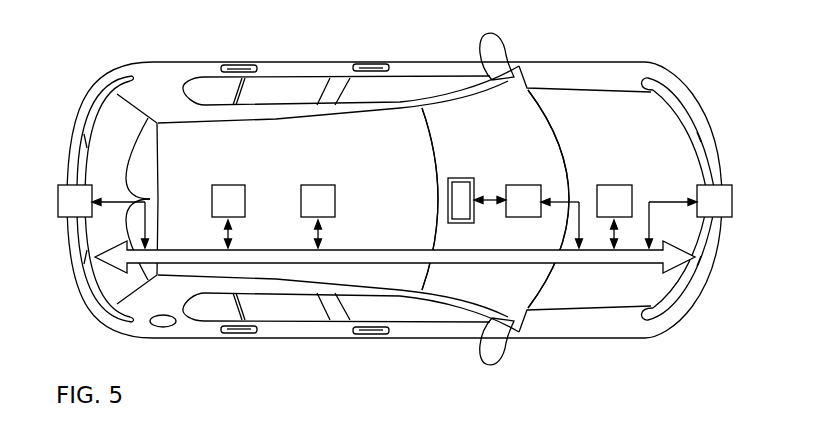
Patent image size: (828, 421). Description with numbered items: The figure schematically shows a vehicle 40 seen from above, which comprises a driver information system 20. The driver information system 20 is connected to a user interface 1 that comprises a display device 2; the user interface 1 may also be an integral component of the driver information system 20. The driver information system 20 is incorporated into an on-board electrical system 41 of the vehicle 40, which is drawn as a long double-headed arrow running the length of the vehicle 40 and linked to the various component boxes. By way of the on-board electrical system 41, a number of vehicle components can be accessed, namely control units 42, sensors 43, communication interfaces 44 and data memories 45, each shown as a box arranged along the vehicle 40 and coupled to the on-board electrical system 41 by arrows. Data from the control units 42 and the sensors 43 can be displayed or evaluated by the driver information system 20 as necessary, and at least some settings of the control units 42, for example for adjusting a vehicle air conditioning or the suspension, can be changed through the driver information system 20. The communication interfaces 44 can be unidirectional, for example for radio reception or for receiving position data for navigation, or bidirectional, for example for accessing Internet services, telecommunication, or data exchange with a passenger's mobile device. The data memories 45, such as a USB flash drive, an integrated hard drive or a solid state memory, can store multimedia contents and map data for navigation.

The user interface 1 is at (461, 222).
The display device 2 is at (457, 182).
The driver information system 20 is at (525, 185).
The vehicle 40 is at (614, 62).
The on-board electrical system 41 is at (614, 262).
The control units 42 is at (615, 185).
The sensors 43 is at (59, 202).
The communication interfaces 44 is at (228, 186).
The data memories 45 is at (318, 186).